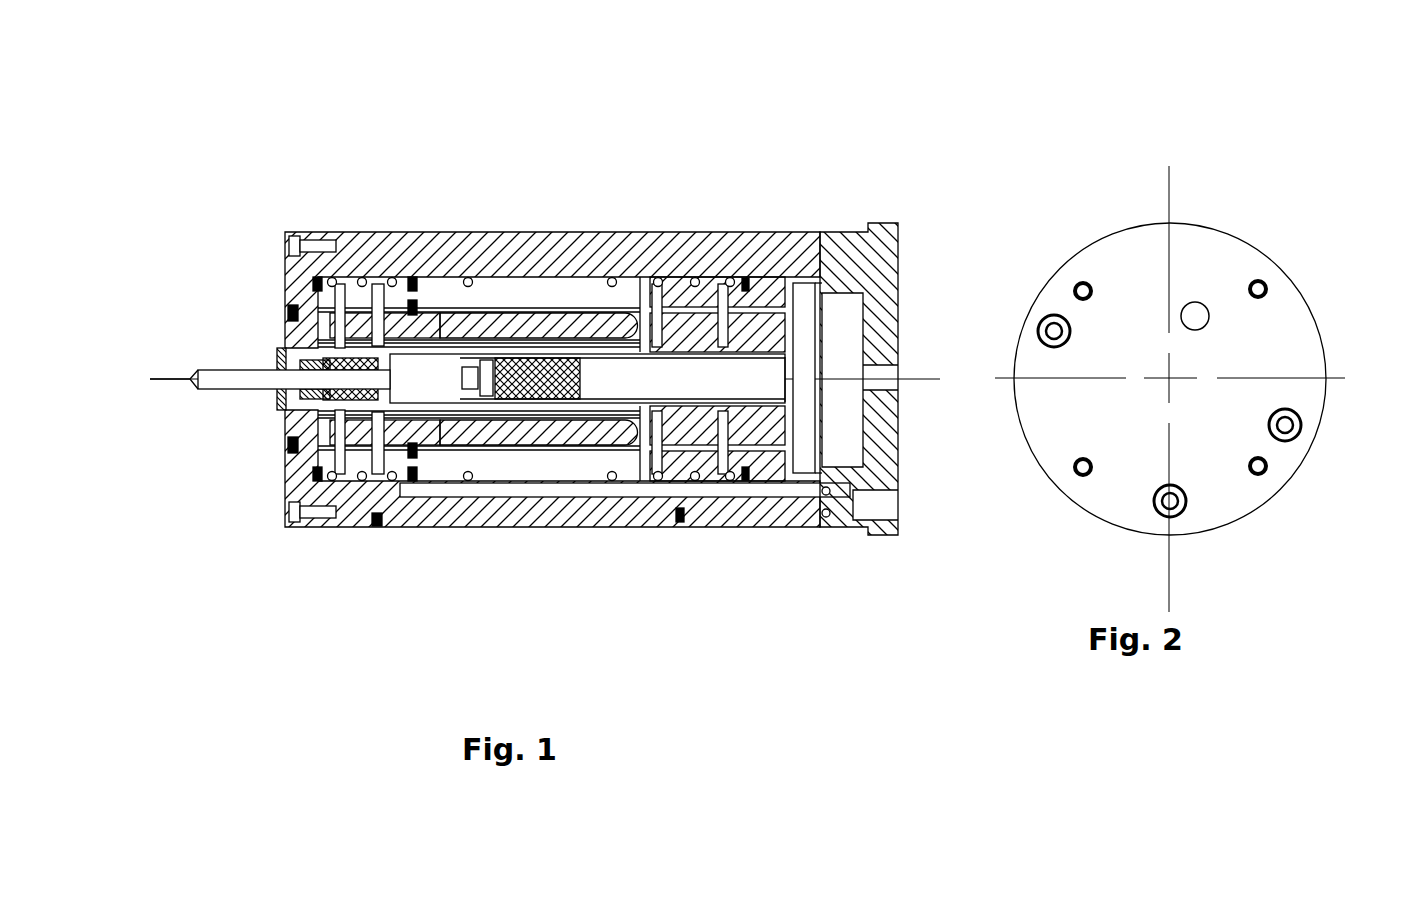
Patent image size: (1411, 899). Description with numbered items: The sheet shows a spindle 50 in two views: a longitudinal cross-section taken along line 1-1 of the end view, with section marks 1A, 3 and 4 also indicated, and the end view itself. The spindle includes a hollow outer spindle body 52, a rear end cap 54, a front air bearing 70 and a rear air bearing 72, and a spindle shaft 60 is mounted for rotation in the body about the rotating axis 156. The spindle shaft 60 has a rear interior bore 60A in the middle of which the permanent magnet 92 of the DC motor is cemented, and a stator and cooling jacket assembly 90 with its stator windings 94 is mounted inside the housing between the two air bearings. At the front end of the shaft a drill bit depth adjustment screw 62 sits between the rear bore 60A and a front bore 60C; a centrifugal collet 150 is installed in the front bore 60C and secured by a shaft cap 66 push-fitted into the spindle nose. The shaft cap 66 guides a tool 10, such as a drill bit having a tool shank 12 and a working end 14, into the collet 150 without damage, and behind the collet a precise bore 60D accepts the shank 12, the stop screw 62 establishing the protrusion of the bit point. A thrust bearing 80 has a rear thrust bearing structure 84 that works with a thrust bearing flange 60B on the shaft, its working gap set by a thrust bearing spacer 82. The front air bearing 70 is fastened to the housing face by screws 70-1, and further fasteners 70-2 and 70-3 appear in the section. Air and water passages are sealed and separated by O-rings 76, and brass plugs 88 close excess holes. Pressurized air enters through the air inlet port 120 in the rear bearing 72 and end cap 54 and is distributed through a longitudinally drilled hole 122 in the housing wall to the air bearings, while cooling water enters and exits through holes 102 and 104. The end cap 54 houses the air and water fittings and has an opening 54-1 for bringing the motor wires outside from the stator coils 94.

In FIG. 1, the tool 10 is at (189, 389).
In FIG. 1, the tool shank 12 is at (249, 366).
In FIG. 1, the working end 14 is at (157, 380).
In FIG. 1, the spindle 50 is at (489, 197).
In FIG. 2, the spindle 50 is at (1259, 236).
In FIG. 1, the outer spindle body 52 is at (768, 231).
In FIG. 1, the rear end cap 54 is at (886, 222).
In FIG. 2, the rear end cap 54 is at (1245, 518).
In FIG. 2, the hole 54-1 is at (1212, 319).
In FIG. 1, the spindle shaft 60 is at (286, 338).
In FIG. 1, the rear interior bore 60A is at (672, 397).
In FIG. 1, the thrust bearing flange 60B is at (409, 476).
In FIG. 1, the front bore 60C is at (351, 453).
In FIG. 1, the precise bore 60D is at (373, 356).
In FIG. 1, the drill bit depth adjustment screw 62 is at (371, 471).
In FIG. 1, the shaft cap 66 is at (275, 346).
In FIG. 1, the front air bearing 70 is at (291, 239).
In FIG. 1, the screws 70-1 is at (282, 514).
In FIG. 1, the fastener 70-2 is at (345, 486).
In FIG. 1, the fastener 70-3 is at (397, 481).
In FIG. 1, the rear air bearing 72 is at (773, 473).
In FIG. 1, the O-rings 76 is at (467, 276).
In FIG. 1, the thrust bearing 80 is at (446, 469).
In FIG. 1, the thrust bearing spacer 82 is at (426, 484).
In FIG. 1, the rear thrust bearing structure 84 is at (437, 485).
In FIG. 1, the brass plugs 88 is at (746, 272).
In FIG. 1, the stator and cooling jacket assembly 90 is at (521, 275).
In FIG. 1, the permanent magnet 92 is at (560, 401).
In FIG. 1, the motor stator windings 94 is at (552, 276).
In FIG. 2, the water inlet hole 102 is at (1055, 317).
In FIG. 2, the water outlet hole 104 is at (1290, 443).
In FIG. 1, the air inlet port 120 is at (897, 508).
In FIG. 2, the air inlet port 120 is at (1160, 511).
In FIG. 1, the air distribution hole 122 is at (718, 498).
In FIG. 1, the centrifugal collet 150 is at (286, 436).
In FIG. 1, the rotating axis 156 is at (917, 385).
In FIG. 1, the section line 1A is at (658, 682).
In FIG. 2, the line 1- 1 is at (1169, 166).
In FIG. 2, the section line 3 is at (1069, 584).
In FIG. 2, the section line 4 is at (1374, 482).